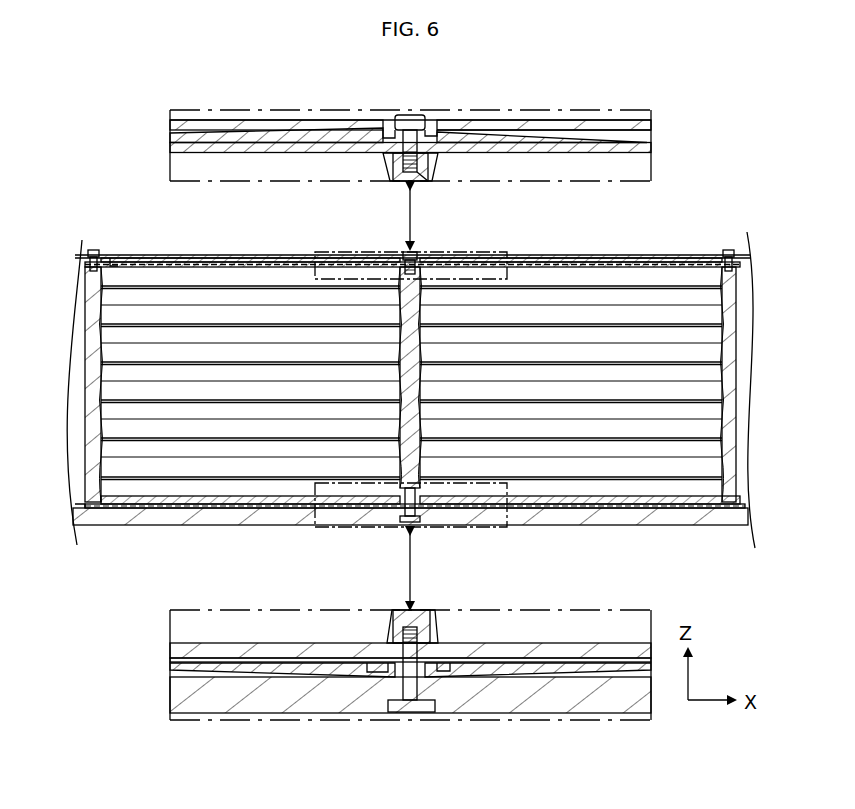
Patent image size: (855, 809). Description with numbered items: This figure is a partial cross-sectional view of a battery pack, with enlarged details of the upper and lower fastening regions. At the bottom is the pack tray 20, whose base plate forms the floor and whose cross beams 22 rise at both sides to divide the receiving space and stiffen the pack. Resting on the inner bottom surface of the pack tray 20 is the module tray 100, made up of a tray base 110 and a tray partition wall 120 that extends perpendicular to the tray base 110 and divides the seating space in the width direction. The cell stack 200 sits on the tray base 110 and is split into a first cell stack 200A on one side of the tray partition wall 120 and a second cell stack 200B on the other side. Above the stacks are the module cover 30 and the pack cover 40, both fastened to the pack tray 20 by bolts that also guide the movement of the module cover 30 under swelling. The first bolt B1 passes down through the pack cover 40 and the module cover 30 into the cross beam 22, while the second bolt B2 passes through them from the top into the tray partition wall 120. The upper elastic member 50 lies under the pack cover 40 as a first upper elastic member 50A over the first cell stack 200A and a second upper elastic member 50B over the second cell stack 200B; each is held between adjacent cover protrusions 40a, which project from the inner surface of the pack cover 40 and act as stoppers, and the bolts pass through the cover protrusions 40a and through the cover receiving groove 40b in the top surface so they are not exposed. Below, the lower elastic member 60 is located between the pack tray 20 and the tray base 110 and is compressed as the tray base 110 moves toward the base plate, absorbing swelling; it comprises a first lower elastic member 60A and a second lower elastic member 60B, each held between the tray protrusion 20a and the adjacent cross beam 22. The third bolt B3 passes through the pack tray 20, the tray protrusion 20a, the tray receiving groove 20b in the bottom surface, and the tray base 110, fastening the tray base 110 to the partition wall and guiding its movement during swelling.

The pack tray 20 is at (727, 524).
The tray protrusion 20a is at (390, 668).
The tray receiving groove 20b is at (430, 712).
The cross beam 22 is at (97, 320).
The module cover 30 is at (645, 147).
The pack cover 40 is at (619, 126).
The cover protrusion 40a is at (389, 137).
The cover receiving groove 40b is at (433, 128).
The upper elastic member 50 is at (411, 167).
The first upper elastic member 50A is at (281, 134).
The second upper elastic member 50B is at (536, 135).
The lower elastic member 60 is at (420, 629).
The first lower elastic member 60A is at (270, 500).
The second lower elastic member 60B is at (598, 500).
The module tray 100 is at (400, 583).
The tray base 110 is at (132, 509).
The tray partition wall 120 is at (415, 462).
The cell stack 200 is at (411, 432).
The first cell stack 200A is at (220, 488).
The second cell stack 200B is at (568, 488).
The first bolt B1 is at (93, 250).
The second bolt B2 is at (410, 114).
The third bolt B3 is at (410, 713).